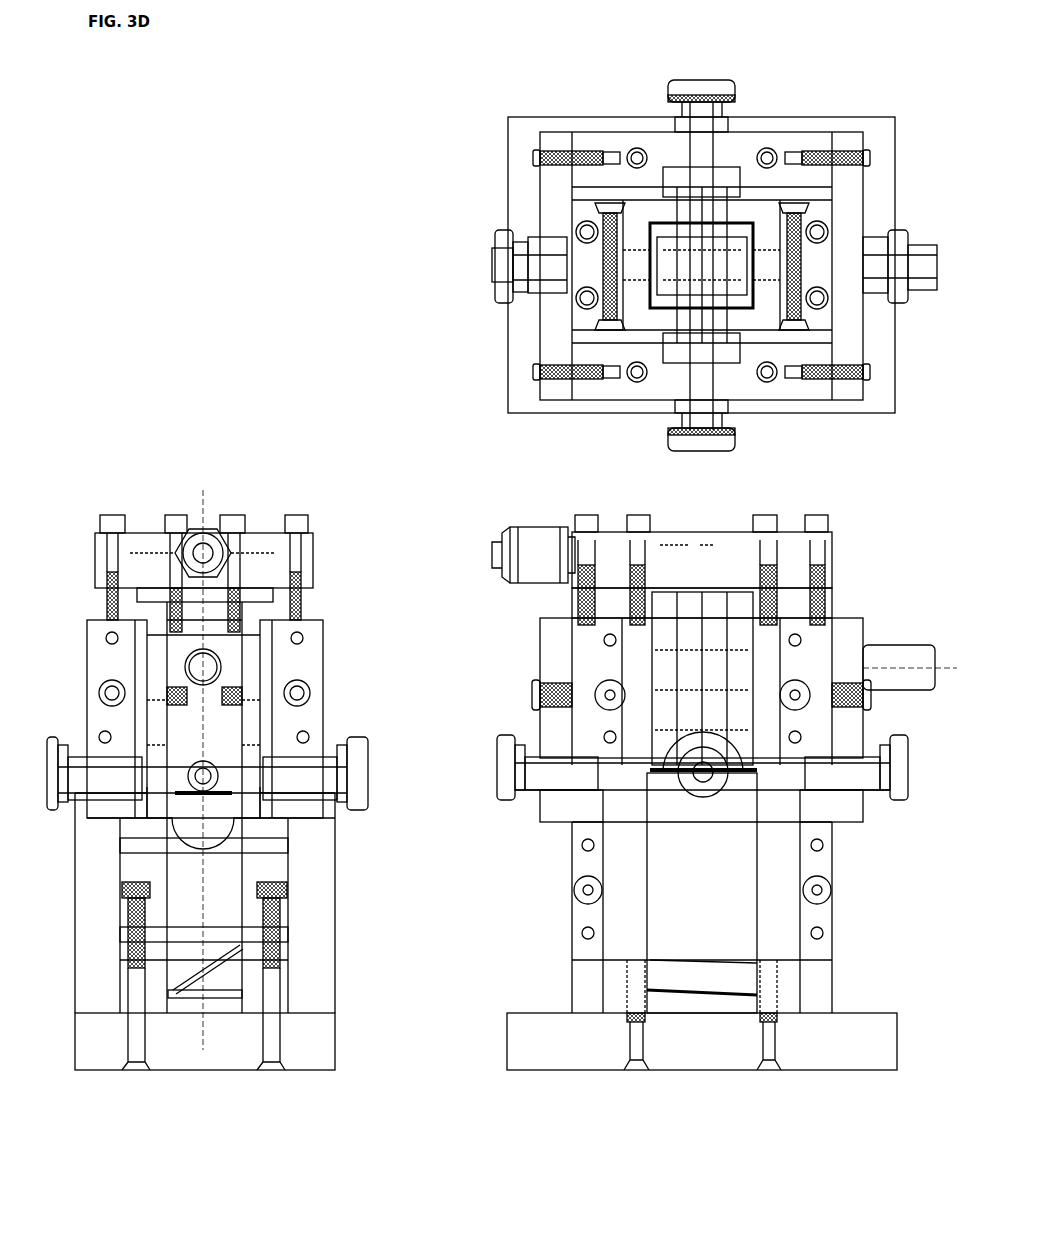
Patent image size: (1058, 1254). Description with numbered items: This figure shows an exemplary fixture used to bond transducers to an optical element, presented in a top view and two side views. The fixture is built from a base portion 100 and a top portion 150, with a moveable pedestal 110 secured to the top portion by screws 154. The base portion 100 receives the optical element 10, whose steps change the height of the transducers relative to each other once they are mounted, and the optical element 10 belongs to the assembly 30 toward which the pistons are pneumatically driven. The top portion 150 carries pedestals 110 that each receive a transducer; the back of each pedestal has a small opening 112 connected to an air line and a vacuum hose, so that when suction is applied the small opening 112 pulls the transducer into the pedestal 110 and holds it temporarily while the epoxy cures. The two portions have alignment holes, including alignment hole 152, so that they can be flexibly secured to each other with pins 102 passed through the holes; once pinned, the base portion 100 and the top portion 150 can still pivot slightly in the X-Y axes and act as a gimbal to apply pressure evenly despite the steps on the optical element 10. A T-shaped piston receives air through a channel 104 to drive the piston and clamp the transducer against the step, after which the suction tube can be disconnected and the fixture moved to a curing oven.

The optical element 10 is at (702, 893).
The assembly 30 is at (702, 977).
The base portion 100 is at (702, 1041).
The pins 102 is at (504, 520).
The channel 104 is at (808, 772).
The moveable pedestal 110 is at (745, 270).
The small opening 112 is at (742, 253).
The top portion 150 is at (744, 684).
The alignment hole 152 is at (702, 578).
The screws 154 is at (464, 515).